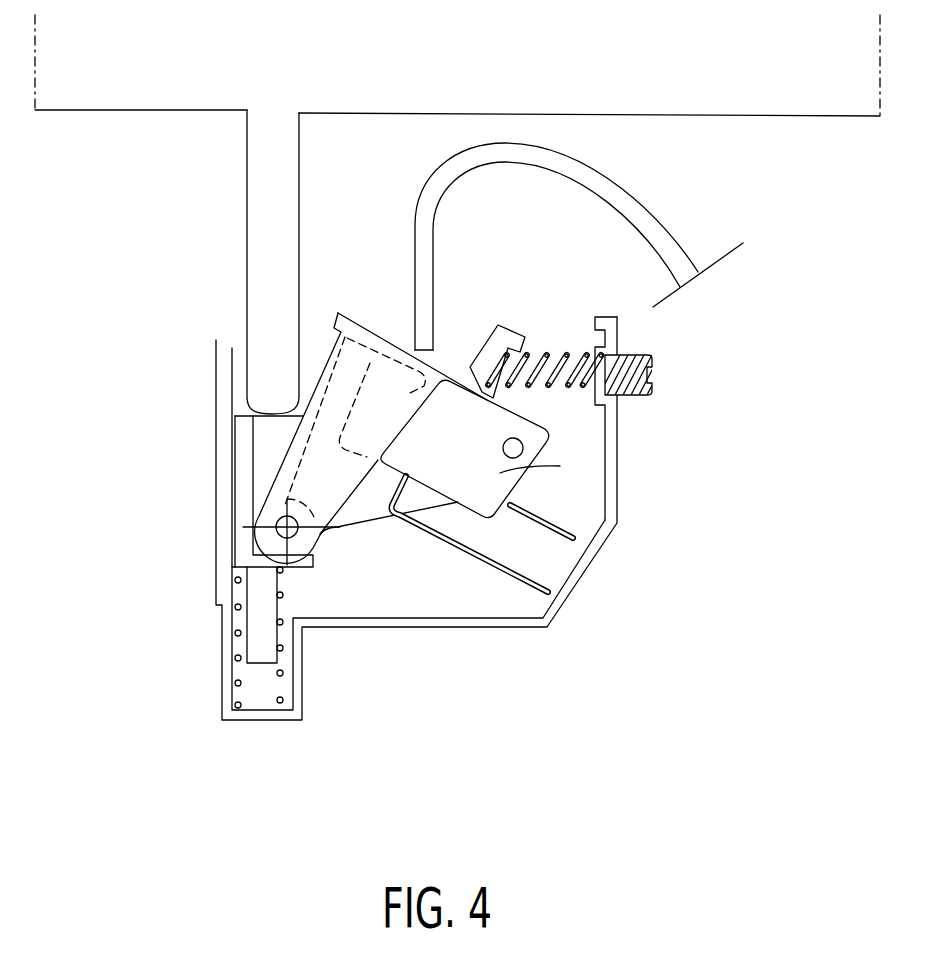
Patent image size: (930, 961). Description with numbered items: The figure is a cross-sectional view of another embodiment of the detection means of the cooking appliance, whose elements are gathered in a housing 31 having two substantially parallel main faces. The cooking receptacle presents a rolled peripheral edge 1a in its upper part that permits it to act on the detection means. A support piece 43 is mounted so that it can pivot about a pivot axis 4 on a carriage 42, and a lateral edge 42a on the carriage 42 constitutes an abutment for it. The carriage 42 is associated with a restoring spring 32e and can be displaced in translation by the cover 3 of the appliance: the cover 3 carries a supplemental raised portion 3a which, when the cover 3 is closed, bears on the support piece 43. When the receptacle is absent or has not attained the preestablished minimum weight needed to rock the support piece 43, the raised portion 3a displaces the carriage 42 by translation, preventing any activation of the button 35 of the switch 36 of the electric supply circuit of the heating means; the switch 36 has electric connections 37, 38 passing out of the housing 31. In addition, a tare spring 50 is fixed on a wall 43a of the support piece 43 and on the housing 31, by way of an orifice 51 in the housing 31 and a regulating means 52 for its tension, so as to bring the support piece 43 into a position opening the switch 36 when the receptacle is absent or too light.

The cover 3 is at (105, 90).
The supplemental raised portion 3a is at (262, 196).
The rolled peripheral edge 1a is at (426, 243).
The pivot axis 4 is at (291, 524).
The housing 31 is at (613, 508).
The restoring spring 32e is at (283, 597).
The button 35 is at (433, 366).
The switch 36 is at (560, 466).
The electric connection 37 is at (533, 590).
The electric connection 38 is at (562, 540).
The carriage 42 is at (272, 452).
The lateral edge 42a is at (242, 440).
The support piece 43 is at (358, 338).
The wall 43a is at (503, 340).
The tare spring 50 is at (565, 385).
The orifice 51 is at (618, 347).
The regulating means 52 is at (655, 377).